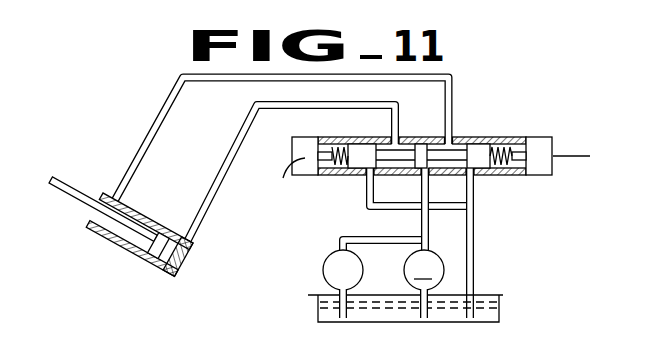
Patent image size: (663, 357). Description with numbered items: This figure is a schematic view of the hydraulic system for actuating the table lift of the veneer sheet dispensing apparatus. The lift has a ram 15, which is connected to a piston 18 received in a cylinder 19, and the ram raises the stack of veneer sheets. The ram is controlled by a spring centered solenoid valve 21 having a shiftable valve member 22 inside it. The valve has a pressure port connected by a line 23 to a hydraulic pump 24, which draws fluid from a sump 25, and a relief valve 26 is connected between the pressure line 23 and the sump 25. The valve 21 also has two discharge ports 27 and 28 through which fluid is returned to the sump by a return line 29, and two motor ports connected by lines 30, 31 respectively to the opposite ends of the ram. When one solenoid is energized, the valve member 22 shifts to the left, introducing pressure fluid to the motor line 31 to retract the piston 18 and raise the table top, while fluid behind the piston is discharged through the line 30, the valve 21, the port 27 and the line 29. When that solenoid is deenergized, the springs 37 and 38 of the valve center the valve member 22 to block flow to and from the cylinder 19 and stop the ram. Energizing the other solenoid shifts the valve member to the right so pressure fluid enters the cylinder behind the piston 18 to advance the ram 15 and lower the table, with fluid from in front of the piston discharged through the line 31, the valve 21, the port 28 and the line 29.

The ram 15 is at (55, 179).
The piston 18 is at (158, 255).
The cylinder 19 is at (111, 240).
The spring centered solenoid valve 21 is at (483, 137).
The valve member 22 is at (370, 145).
The line 23 is at (418, 219).
The hydraulic pump 24 is at (405, 258).
The sump 25 is at (500, 307).
The relief valve 26 is at (324, 264).
The discharge port 27 is at (367, 184).
The discharge port 28 is at (476, 189).
The return line 29 is at (475, 238).
The line 30 is at (399, 121).
The line 31 is at (453, 87).
The spring 37 is at (327, 141).
The spring 38 is at (520, 177).